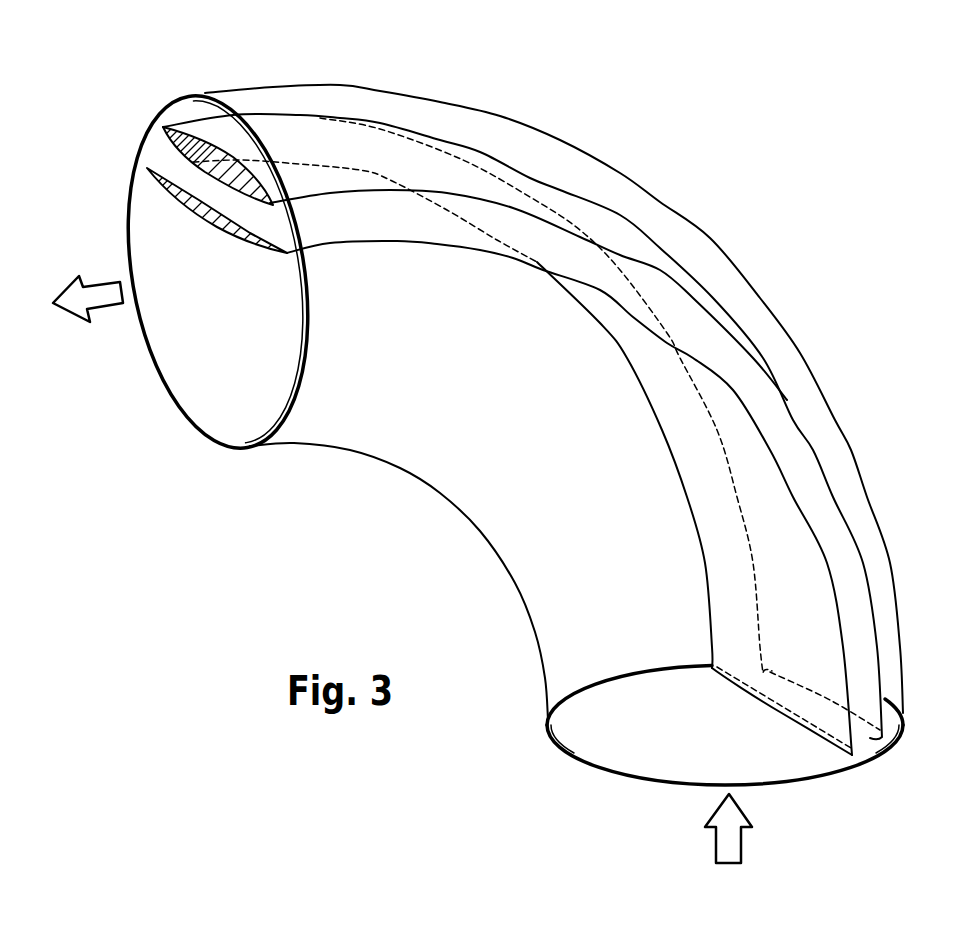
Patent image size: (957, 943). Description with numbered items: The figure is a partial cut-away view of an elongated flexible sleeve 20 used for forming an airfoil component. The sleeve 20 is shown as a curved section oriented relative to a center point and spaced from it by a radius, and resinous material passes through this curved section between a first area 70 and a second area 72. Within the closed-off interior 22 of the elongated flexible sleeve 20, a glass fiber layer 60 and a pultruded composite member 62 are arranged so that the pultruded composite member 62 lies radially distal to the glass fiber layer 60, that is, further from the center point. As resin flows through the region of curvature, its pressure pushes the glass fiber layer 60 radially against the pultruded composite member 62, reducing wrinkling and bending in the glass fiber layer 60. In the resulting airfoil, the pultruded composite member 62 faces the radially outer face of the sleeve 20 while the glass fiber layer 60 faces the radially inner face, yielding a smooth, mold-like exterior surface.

The elongated flexible sleeve 20 is at (410, 468).
The closed-off interior 22 is at (530, 415).
The glass fiber layer 60 is at (437, 245).
The pultruded composite member 62 is at (473, 148).
The first area 70 is at (623, 748).
The second area 72 is at (213, 390).